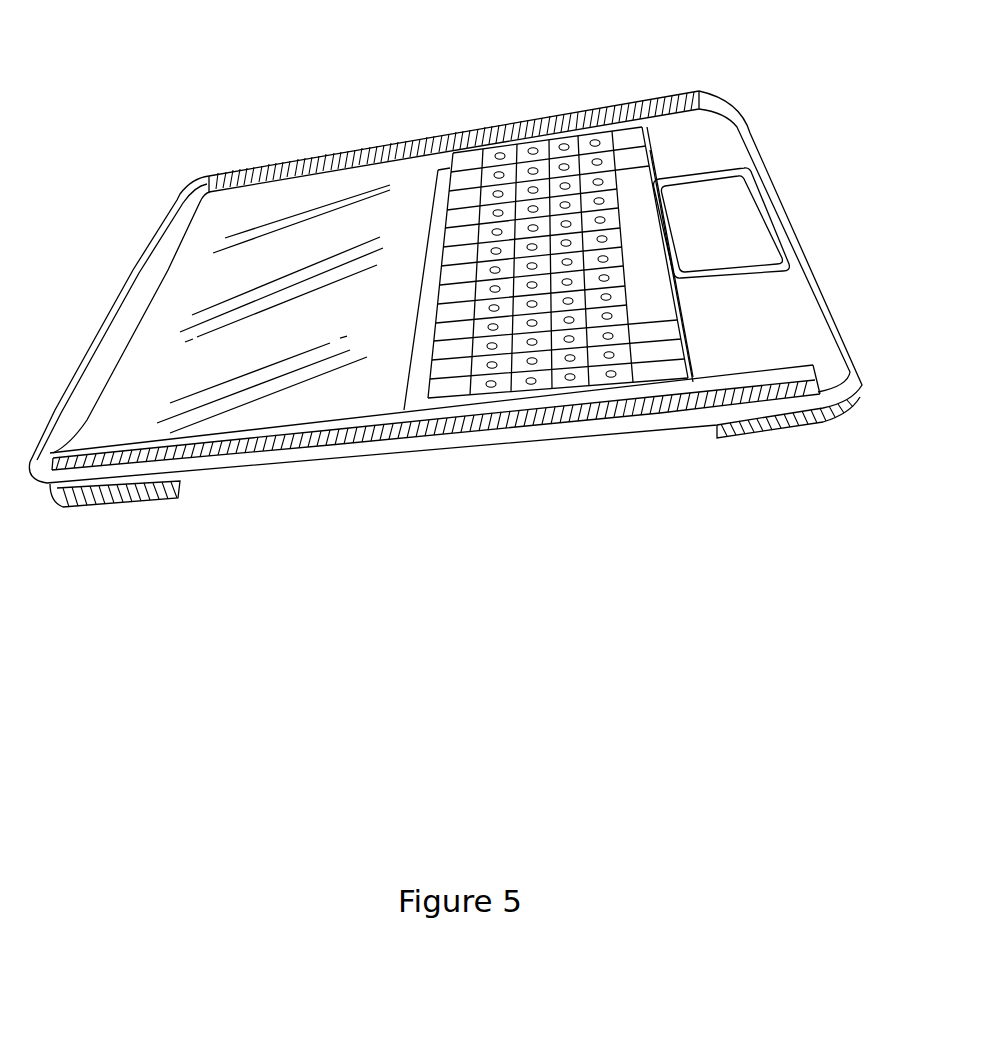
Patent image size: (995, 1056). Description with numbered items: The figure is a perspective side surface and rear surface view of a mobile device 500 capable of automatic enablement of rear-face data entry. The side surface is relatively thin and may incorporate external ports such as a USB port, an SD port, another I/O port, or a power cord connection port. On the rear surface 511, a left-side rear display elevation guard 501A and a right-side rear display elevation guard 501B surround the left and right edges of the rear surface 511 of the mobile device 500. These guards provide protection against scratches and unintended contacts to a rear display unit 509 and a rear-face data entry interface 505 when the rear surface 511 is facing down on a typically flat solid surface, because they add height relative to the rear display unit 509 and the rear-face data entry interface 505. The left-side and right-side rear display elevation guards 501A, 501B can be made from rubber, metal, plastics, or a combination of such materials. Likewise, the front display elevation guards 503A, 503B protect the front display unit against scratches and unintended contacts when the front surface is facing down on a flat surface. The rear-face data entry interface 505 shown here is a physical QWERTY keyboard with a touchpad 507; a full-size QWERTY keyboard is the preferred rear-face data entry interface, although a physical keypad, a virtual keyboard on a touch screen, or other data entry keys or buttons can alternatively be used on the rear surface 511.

The mobile device 500 is at (471, 842).
The left-side rear display elevation guard 501A is at (362, 434).
The right-side rear display elevation guard 501B is at (278, 155).
The front display elevation guard 503A is at (766, 447).
The front display elevation guard 503B is at (110, 515).
The rear-face data entry interface 505 is at (577, 212).
The touchpad 507 is at (739, 224).
The rear display unit 509 is at (304, 243).
The rear surface 511 is at (714, 144).